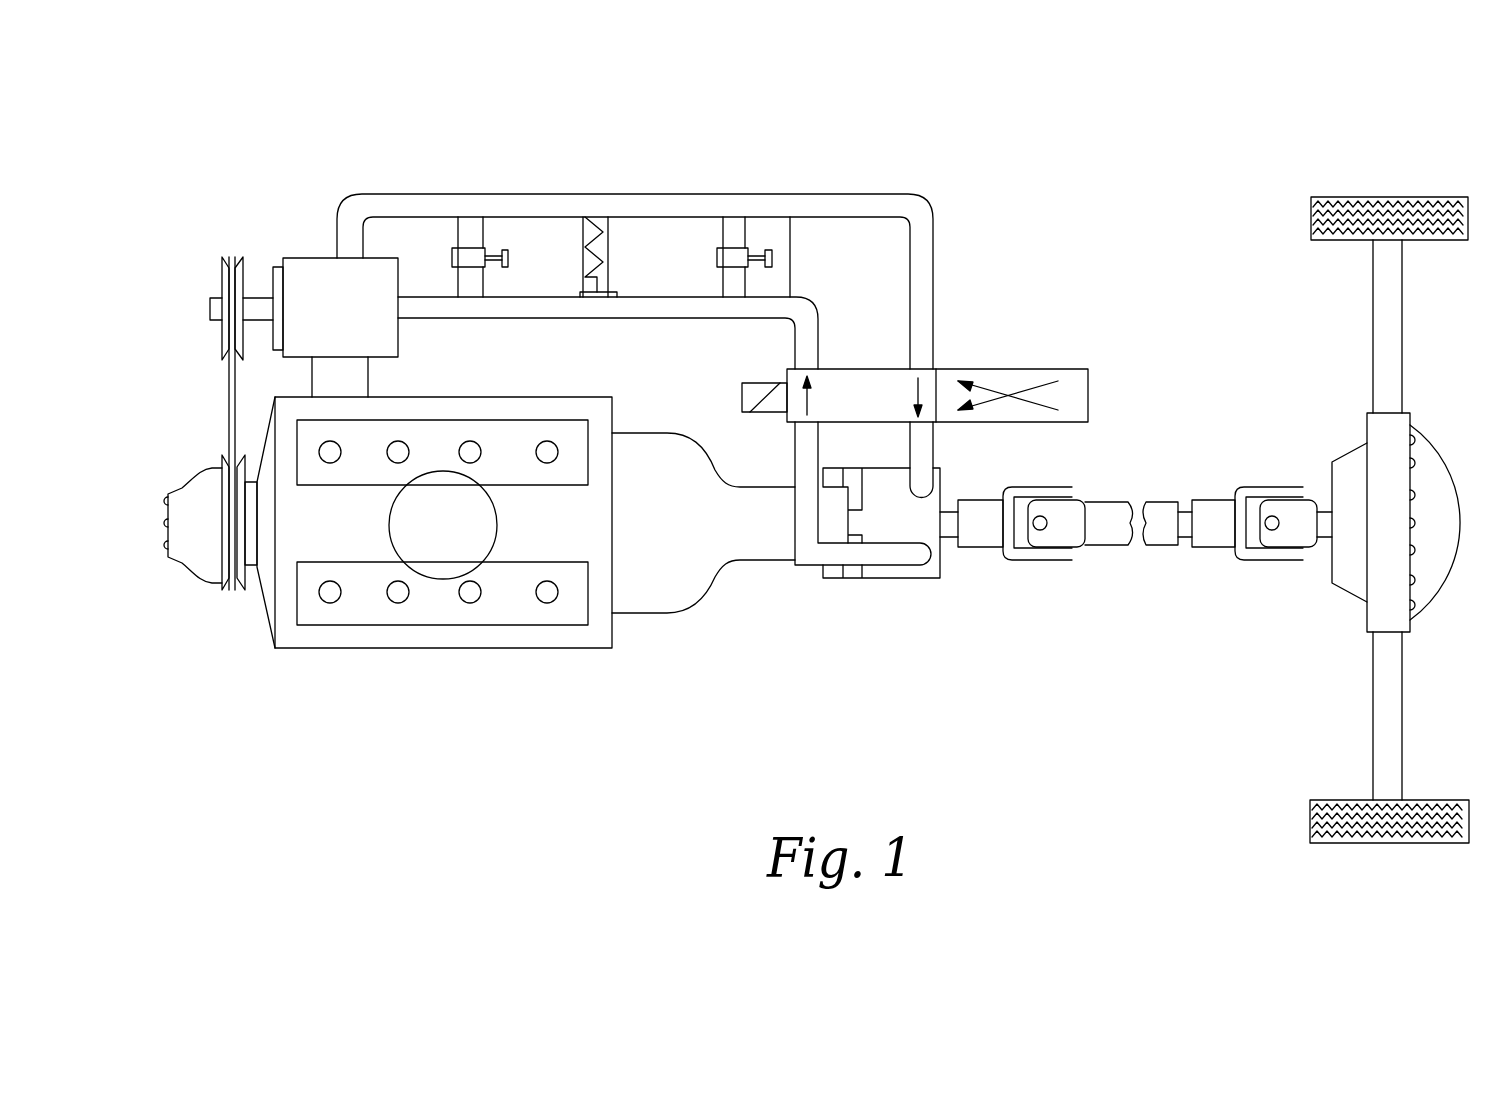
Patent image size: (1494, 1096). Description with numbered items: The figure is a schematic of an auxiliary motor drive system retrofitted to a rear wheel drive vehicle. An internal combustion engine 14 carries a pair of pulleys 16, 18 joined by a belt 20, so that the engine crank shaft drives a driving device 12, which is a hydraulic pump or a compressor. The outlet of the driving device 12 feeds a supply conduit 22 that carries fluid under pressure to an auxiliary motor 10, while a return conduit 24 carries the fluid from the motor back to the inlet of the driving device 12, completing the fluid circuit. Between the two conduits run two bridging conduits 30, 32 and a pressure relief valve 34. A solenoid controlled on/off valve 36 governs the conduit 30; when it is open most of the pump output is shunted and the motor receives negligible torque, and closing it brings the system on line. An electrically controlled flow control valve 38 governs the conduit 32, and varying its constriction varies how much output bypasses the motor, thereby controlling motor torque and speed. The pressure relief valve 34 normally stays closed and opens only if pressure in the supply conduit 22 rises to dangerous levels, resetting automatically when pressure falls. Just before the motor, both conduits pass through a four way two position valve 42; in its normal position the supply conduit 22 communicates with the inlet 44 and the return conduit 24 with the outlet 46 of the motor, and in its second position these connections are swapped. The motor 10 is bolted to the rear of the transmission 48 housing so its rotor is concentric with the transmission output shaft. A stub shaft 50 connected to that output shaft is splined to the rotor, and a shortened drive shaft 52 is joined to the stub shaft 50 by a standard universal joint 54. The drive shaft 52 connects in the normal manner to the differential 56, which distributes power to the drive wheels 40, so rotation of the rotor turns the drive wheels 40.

The auxiliary motor 10 is at (920, 527).
The driving device 12 is at (312, 270).
The internal combustion engine 14 is at (505, 610).
The pulley 16 is at (222, 462).
The pulley 18 is at (243, 270).
The belt 20 is at (229, 400).
The supply conduit 22 is at (583, 194).
The return conduit 24 is at (582, 316).
The conduit 30 is at (483, 232).
The conduit 32 is at (765, 232).
The pressure relief valve 34 is at (610, 258).
The solenoid controlled on/off valve 36 is at (475, 268).
The electrically controlled flow control valve 38 is at (737, 268).
The drive wheels 40 is at (1350, 197).
The four way two position valve 42 is at (1000, 369).
The inlet 44 is at (930, 487).
The outlet 46 is at (940, 547).
The transmission 48 is at (675, 588).
The stub shaft 50 is at (945, 510).
The drive shaft 52 is at (1110, 535).
The universal joint 54 is at (1053, 555).
The differential 56 is at (1432, 467).